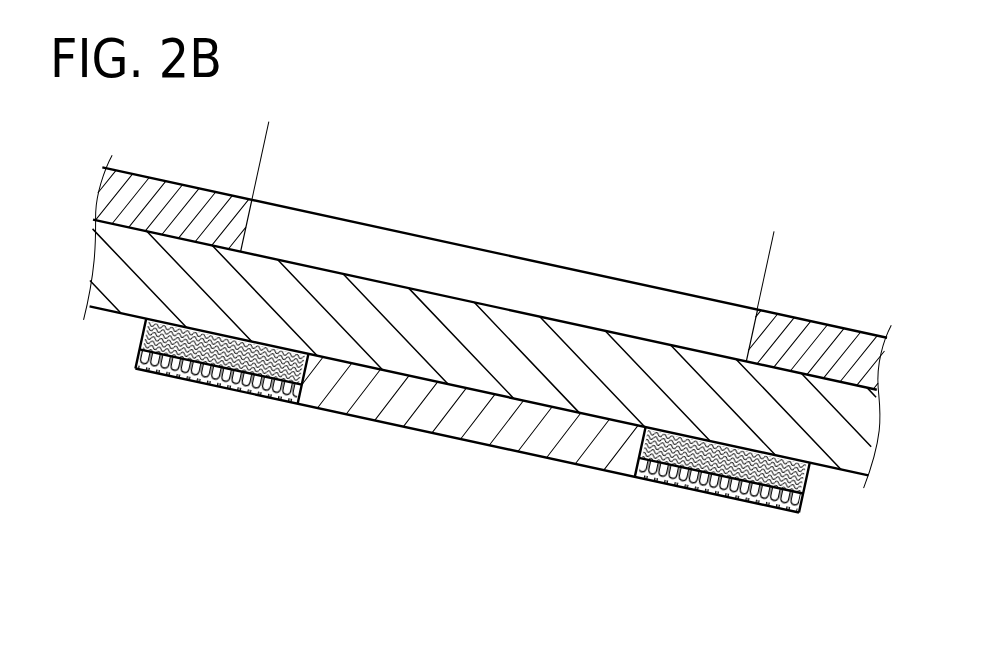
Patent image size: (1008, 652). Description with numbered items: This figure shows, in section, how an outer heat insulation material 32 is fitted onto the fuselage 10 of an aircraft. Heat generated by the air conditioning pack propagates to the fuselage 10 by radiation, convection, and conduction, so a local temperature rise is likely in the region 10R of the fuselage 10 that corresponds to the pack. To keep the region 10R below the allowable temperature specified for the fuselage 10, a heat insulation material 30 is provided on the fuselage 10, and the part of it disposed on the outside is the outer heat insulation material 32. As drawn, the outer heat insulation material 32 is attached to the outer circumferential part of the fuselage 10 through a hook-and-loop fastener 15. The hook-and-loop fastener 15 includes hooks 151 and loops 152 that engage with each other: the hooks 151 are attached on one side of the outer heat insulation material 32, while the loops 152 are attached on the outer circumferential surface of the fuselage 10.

The fuselage 10 is at (177, 233).
The region of the fuselage 10R is at (513, 216).
The heat insulation material 30 is at (472, 443).
The outer heat insulation material 32 is at (576, 462).
The hook-and-loop fastener 15 is at (472, 474).
The hooks 151 is at (703, 487).
The loops 152 is at (763, 500).